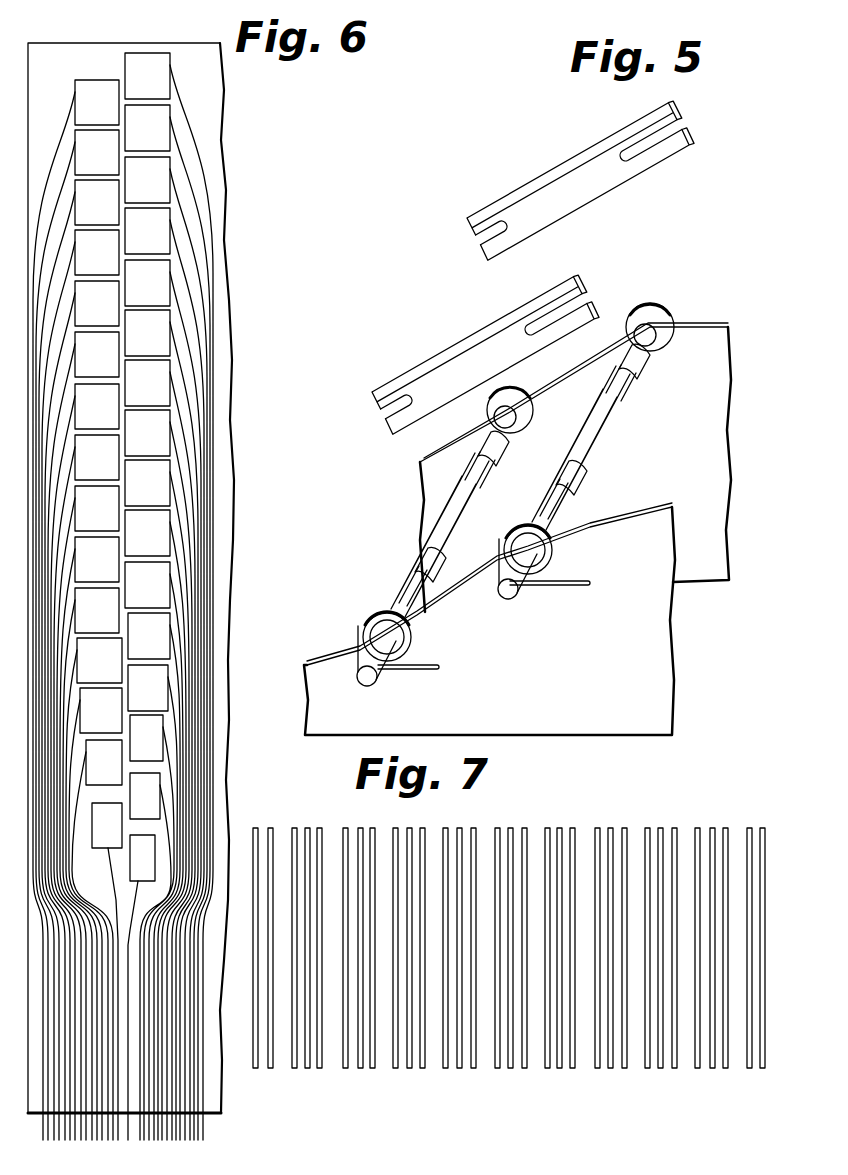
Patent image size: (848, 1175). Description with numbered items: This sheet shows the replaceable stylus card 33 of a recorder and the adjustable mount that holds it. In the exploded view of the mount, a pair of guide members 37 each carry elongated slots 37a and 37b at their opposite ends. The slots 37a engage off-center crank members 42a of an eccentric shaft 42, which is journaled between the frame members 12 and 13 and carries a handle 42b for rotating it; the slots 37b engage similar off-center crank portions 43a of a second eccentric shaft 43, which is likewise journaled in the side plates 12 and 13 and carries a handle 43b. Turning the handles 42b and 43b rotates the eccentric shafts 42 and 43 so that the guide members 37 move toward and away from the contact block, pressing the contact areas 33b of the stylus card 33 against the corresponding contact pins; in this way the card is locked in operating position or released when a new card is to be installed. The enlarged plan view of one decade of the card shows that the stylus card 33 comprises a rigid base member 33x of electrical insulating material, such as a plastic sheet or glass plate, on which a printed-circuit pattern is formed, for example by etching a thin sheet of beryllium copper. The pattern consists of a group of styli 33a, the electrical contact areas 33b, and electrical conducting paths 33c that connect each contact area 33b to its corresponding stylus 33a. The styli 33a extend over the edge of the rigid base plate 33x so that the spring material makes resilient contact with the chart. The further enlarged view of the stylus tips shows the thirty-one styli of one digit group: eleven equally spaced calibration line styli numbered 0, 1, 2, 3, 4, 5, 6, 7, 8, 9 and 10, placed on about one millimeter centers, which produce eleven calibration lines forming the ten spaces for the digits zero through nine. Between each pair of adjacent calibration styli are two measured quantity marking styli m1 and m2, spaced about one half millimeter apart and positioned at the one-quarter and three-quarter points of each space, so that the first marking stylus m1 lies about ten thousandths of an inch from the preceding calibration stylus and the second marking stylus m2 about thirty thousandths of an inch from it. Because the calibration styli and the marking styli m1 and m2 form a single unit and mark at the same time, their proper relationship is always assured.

In FIG. 6, the stylus card 33 is at (290, 393).
In FIG. 6, the rigid base member 33x is at (210, 120).
In FIG. 6, the styli 33a is at (228, 1137).
In FIG. 7, the styli 33a is at (508, 1150).
In FIG. 6, the contact areas 33b is at (243, 170).
In FIG. 6, the electrical conducting paths 33c is at (255, 293).
In FIG. 5, the guide members 37 is at (565, 172).
In FIG. 5, the elongated slots 37a is at (483, 233).
In FIG. 5, the elongated slots 37b is at (672, 118).
In FIG. 5, the frame member 12 is at (655, 705).
In FIG. 5, the frame member 13 is at (710, 458).
In FIG. 5, the eccentric shaft 42 is at (437, 543).
In FIG. 5, the off-center crank members 42a is at (498, 428).
In FIG. 5, the handle 42b is at (418, 667).
In FIG. 5, the eccentric shaft 43 is at (598, 435).
In FIG. 5, the off-center crank portions 43a is at (637, 362).
In FIG. 5, the handle 43b is at (570, 583).
In FIG. 7, the calibration line stylus 0 is at (255, 1068).
In FIG. 7, the calibration line stylus 1 is at (307, 1068).
In FIG. 7, the calibration line stylus 2 is at (360, 1068).
In FIG. 7, the calibration line stylus 3 is at (409, 1068).
In FIG. 7, the calibration line stylus 4 is at (459, 1068).
In FIG. 7, the calibration line stylus 5 is at (510, 1068).
In FIG. 7, the calibration line stylus 6 is at (559, 1068).
In FIG. 7, the calibration line stylus 7 is at (610, 1068).
In FIG. 7, the calibration line stylus 8 is at (660, 1068).
In FIG. 7, the calibration line stylus 9 is at (712, 1068).
In FIG. 7, the calibration line stylus 10 is at (762, 1068).
In FIG. 7, the measured quantity marking stylus m1 is at (572, 1098).
In FIG. 7, the measured quantity marking stylus m2 is at (595, 1082).